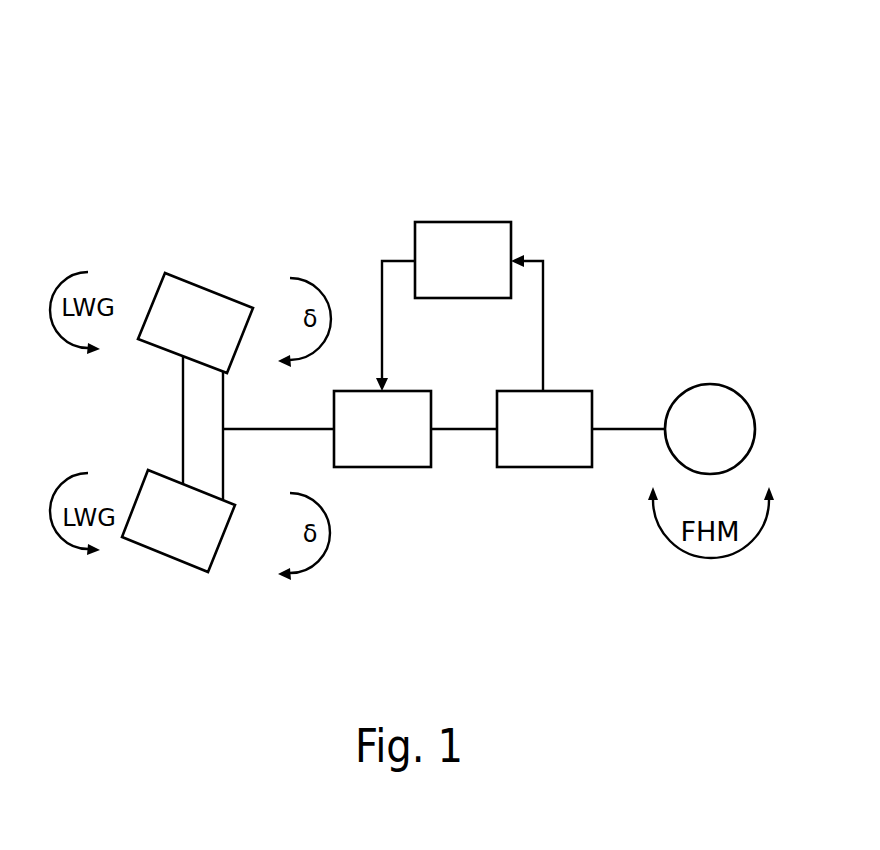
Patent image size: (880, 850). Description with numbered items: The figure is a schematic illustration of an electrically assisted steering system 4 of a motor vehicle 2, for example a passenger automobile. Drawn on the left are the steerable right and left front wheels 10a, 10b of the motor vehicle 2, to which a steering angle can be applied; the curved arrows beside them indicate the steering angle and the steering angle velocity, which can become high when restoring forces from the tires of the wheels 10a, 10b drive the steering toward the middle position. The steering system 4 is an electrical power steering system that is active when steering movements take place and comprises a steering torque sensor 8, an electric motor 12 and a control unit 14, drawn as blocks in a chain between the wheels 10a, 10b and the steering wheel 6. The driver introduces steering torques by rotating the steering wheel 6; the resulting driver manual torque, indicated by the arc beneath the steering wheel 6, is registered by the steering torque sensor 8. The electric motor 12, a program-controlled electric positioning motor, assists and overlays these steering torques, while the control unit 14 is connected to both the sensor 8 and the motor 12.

The motor vehicle 2 is at (189, 94).
The electrically assisted steering system 4 is at (518, 164).
The steering wheel 6 is at (708, 383).
The steering torque sensor 8 is at (571, 390).
The wheel 10a is at (165, 558).
The wheel 10b is at (207, 282).
The electric motor 12 is at (399, 390).
The control unit 14 is at (460, 220).